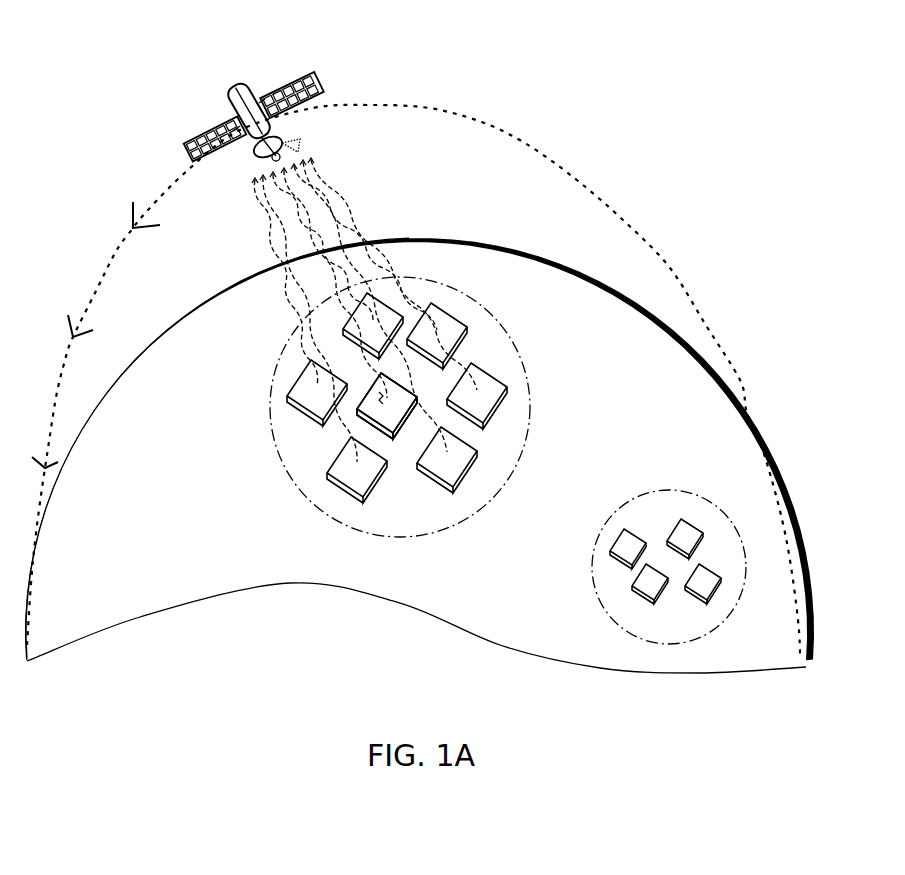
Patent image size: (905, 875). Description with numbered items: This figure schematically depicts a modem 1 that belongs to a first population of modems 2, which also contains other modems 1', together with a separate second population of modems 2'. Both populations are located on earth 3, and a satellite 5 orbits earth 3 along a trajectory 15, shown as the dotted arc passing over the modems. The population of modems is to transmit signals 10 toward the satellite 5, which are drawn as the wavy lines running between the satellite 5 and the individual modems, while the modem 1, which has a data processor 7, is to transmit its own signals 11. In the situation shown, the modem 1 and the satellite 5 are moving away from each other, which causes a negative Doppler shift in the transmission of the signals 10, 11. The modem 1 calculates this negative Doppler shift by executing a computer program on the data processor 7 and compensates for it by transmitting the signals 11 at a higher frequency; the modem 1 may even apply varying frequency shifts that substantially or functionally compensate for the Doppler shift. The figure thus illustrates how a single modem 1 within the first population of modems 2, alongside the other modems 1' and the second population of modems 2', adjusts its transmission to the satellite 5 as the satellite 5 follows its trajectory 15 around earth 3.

The modem 1 is at (387, 422).
The other modems 1' is at (397, 376).
The first population of modems 2 is at (431, 407).
The second population of modems 2' is at (669, 529).
The earth 3 is at (419, 455).
The satellite 5 is at (248, 84).
The data processor 7 is at (359, 412).
The signals 10 is at (257, 185).
The signals 11 is at (262, 159).
The trajectory 15 is at (432, 103).